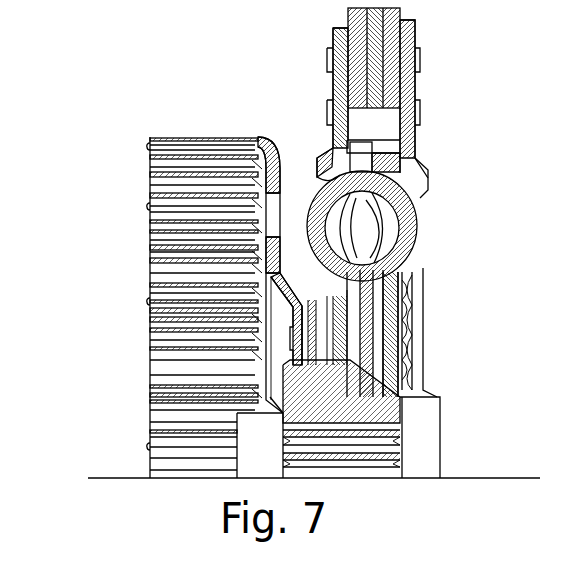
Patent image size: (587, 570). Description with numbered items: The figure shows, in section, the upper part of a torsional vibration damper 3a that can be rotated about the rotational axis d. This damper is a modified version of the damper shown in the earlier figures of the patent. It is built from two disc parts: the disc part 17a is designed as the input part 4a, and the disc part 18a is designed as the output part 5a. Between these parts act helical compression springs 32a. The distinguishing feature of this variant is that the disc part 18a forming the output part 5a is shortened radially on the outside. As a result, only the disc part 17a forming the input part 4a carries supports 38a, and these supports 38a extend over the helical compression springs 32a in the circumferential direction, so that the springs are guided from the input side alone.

The torsional vibration damper 3a is at (114, 113).
The input part 4a is at (298, 318).
The output part 5a is at (385, 308).
The disc part 17a is at (425, 350).
The disc part 18a is at (425, 372).
The helical compression springs 32a is at (418, 222).
The supports 38a is at (325, 149).
The rotational axis d is at (100, 477).